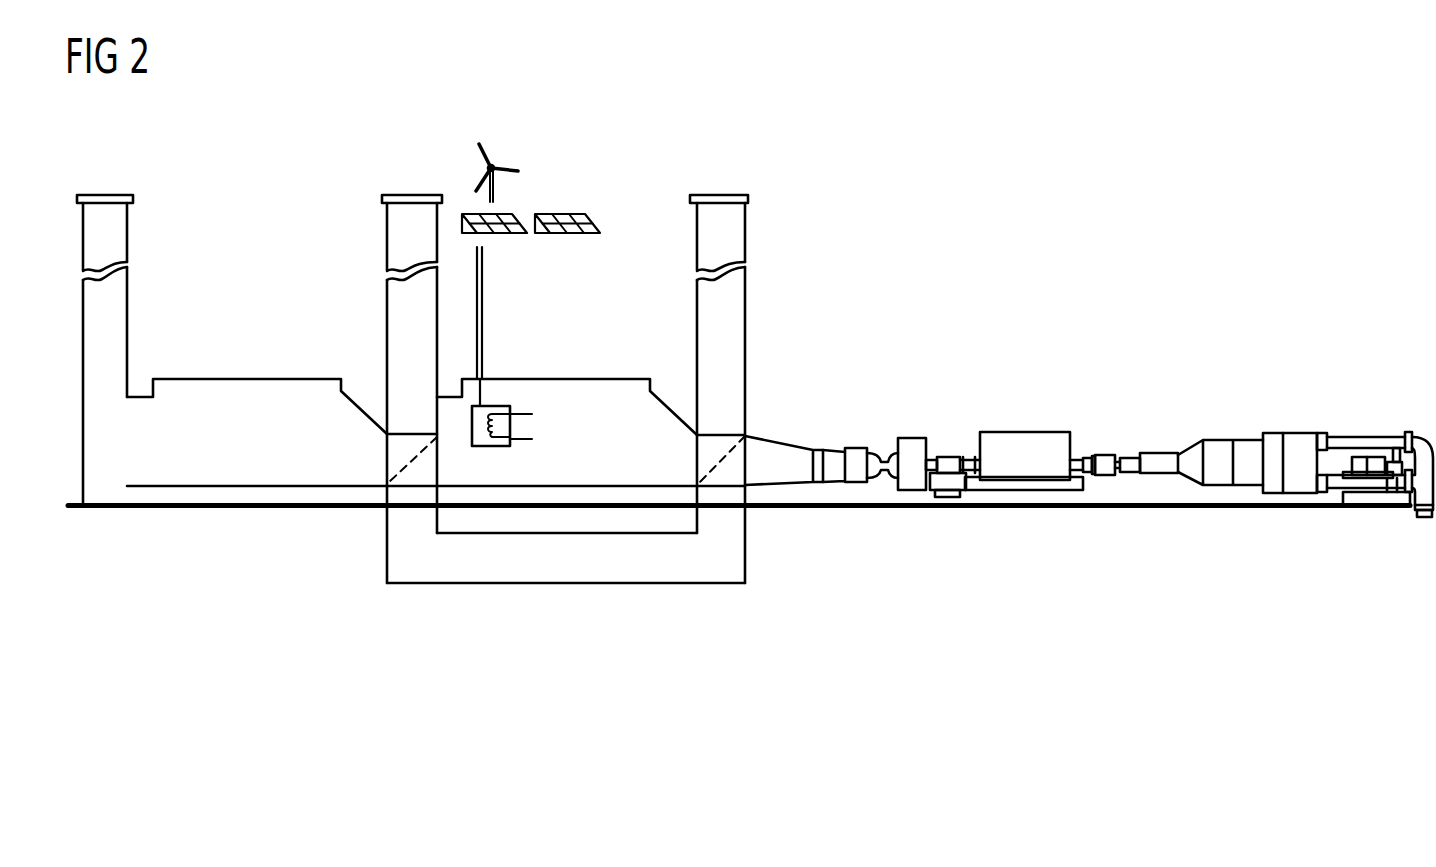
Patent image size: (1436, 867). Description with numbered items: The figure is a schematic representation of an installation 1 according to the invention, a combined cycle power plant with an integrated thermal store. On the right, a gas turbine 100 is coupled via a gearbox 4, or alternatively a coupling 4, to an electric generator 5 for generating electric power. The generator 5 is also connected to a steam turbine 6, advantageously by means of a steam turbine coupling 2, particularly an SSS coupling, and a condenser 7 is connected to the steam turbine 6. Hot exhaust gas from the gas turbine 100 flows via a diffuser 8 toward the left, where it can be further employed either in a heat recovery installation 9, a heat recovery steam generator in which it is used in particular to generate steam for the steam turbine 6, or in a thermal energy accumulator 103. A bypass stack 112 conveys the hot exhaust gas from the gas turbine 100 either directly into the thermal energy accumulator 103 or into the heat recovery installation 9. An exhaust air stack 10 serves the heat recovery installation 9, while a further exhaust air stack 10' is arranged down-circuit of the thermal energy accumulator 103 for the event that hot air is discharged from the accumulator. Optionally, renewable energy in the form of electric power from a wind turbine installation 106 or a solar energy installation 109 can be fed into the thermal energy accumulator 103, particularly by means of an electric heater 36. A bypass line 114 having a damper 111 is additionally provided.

The installation 1 is at (1071, 137).
The steam turbine coupling 2 is at (1107, 444).
The gearbox 4 is at (948, 444).
The electric generator 5 is at (1025, 419).
The steam turbine 6 is at (1222, 420).
The condenser 7 is at (1301, 418).
The diffuser 8 is at (800, 447).
The heat recovery installation 9 is at (248, 379).
The exhaust air stack 10 is at (141, 350).
The further exhaust air stack 10' is at (370, 389).
The electric heater 36 is at (518, 414).
The gas turbine 100 is at (853, 448).
The thermal energy accumulator 103 is at (603, 379).
The wind turbine installation 106 is at (492, 167).
The solar energy installation 109 is at (562, 214).
The damper 111 is at (728, 452).
The bypass stack 112 is at (745, 223).
The bypass line 114 is at (735, 549).